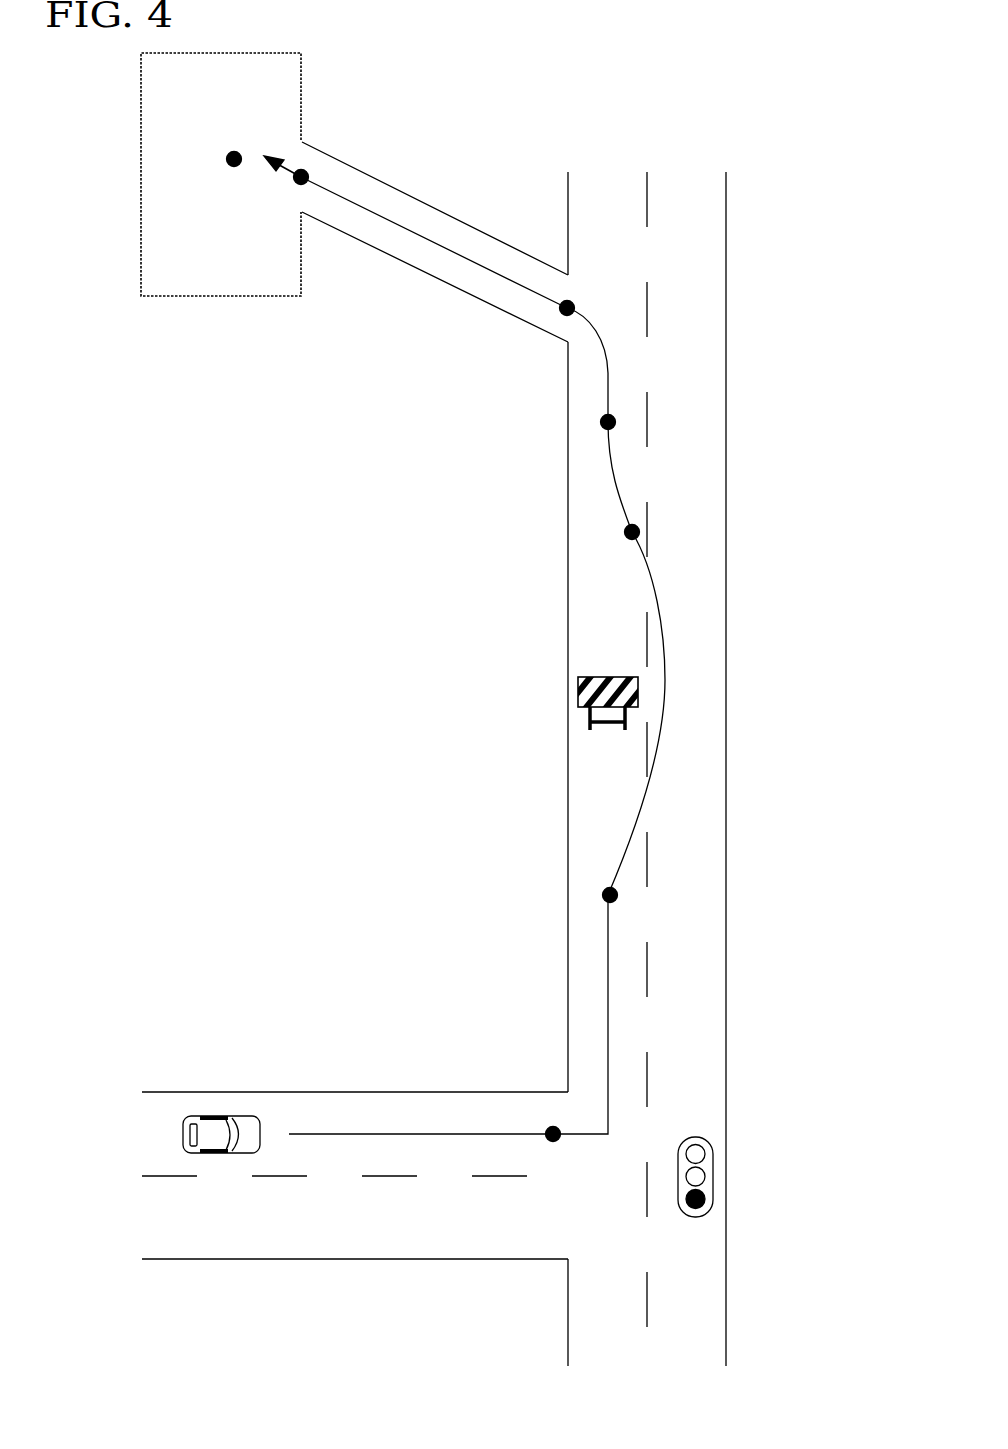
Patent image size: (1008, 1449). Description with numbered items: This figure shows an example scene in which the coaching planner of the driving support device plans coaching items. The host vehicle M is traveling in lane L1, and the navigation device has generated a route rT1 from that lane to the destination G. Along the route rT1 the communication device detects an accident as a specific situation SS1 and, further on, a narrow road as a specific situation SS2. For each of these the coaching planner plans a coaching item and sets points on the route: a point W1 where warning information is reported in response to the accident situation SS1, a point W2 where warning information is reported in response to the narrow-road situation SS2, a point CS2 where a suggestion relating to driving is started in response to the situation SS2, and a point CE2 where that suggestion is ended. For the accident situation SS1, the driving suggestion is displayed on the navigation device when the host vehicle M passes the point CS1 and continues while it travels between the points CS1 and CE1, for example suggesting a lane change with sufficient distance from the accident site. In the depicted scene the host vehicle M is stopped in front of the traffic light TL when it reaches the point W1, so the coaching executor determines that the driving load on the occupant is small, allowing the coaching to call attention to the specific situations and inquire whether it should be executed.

The destination G is at (226, 159).
The point where a suggestion relating to driving is ended CE2 is at (295, 183).
The specific situation SS2 is at (405, 262).
The point where a suggestion relating to driving is started CS2 is at (560, 314).
The point where warning information is reported W2 is at (600, 423).
The point where a suggestion relating to driving is ended CE1 is at (623, 533).
The specific situation SS1 is at (578, 689).
The point where a suggestion relating to driving is started CS1 is at (602, 895).
The host vehicle M is at (221, 1117).
The route rT1 is at (371, 1134).
The point where warning information is reported W1 is at (551, 1127).
The lane L1 is at (123, 1149).
The traffic light TL is at (714, 1175).